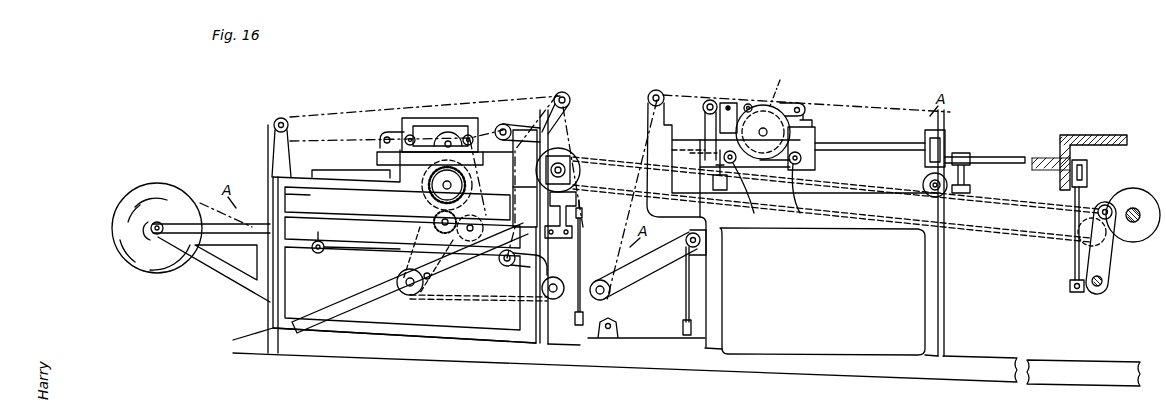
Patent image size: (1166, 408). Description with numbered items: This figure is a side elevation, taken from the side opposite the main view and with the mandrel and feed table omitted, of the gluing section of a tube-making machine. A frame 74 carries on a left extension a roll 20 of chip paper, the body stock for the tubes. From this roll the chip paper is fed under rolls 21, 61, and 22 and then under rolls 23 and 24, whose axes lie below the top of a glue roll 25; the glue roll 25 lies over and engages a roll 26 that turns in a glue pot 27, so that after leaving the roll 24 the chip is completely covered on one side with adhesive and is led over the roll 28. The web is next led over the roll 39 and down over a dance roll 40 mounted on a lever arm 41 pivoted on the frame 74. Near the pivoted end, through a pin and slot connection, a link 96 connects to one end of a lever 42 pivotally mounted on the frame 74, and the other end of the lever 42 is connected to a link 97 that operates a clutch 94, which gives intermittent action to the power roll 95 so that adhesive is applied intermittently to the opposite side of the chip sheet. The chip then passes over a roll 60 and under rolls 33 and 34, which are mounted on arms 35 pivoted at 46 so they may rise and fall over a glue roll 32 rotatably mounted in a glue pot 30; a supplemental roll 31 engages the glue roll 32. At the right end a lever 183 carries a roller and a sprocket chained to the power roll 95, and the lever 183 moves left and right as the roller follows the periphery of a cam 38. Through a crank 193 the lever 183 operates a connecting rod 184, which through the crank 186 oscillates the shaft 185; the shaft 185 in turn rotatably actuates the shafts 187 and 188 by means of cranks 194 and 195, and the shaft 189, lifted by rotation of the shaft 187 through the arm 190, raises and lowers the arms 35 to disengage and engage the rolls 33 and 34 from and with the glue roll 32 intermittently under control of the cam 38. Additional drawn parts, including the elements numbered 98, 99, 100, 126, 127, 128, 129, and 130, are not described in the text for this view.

The roll of chip paper 20 is at (158, 222).
The roll 21 is at (325, 247).
The roll 22 is at (510, 126).
The roll 23 is at (472, 136).
The roll 24 is at (412, 134).
The glue roll 25 is at (450, 140).
The roll 26 is at (428, 160).
The glue pot 27 is at (513, 183).
The roll 28 is at (290, 126).
The glue pot 30 is at (816, 155).
The supplemental roll 31 is at (730, 102).
The glue roll 32 is at (783, 83).
The roll 33 is at (778, 108).
The roll 34 is at (750, 103).
The arms 35 is at (800, 104).
The cam 38 is at (1138, 200).
The roll 39 is at (569, 96).
The dance roll 40 is at (606, 298).
The lever arm 41 is at (654, 270).
The lever 42 is at (660, 334).
The pivot 46 is at (710, 100).
The roll 60 is at (659, 90).
The roll 61 is at (509, 267).
The frame 74 is at (273, 325).
The clutch 94 is at (549, 196).
The power roll 95 is at (572, 158).
The link 96 is at (690, 280).
The link 97 is at (586, 252).
The roller 98 is at (555, 300).
The gear 99 is at (443, 252).
The gear 100 is at (430, 200).
The roller 126 is at (412, 296).
The pin 127 is at (432, 280).
The bar 128 is at (352, 318).
The link 129 is at (754, 185).
The link 130 is at (808, 186).
The lever 183 is at (1112, 260).
The connecting rod 184 is at (1075, 250).
The shaft 185 is at (1012, 158).
The crank 186 is at (1090, 166).
The shaft 187 is at (922, 183).
The shaft 188 is at (875, 145).
The shaft 189 is at (694, 152).
The arm 190 is at (716, 191).
The crank 193 is at (1084, 287).
The crank 194 is at (972, 178).
The crank 195 is at (946, 140).